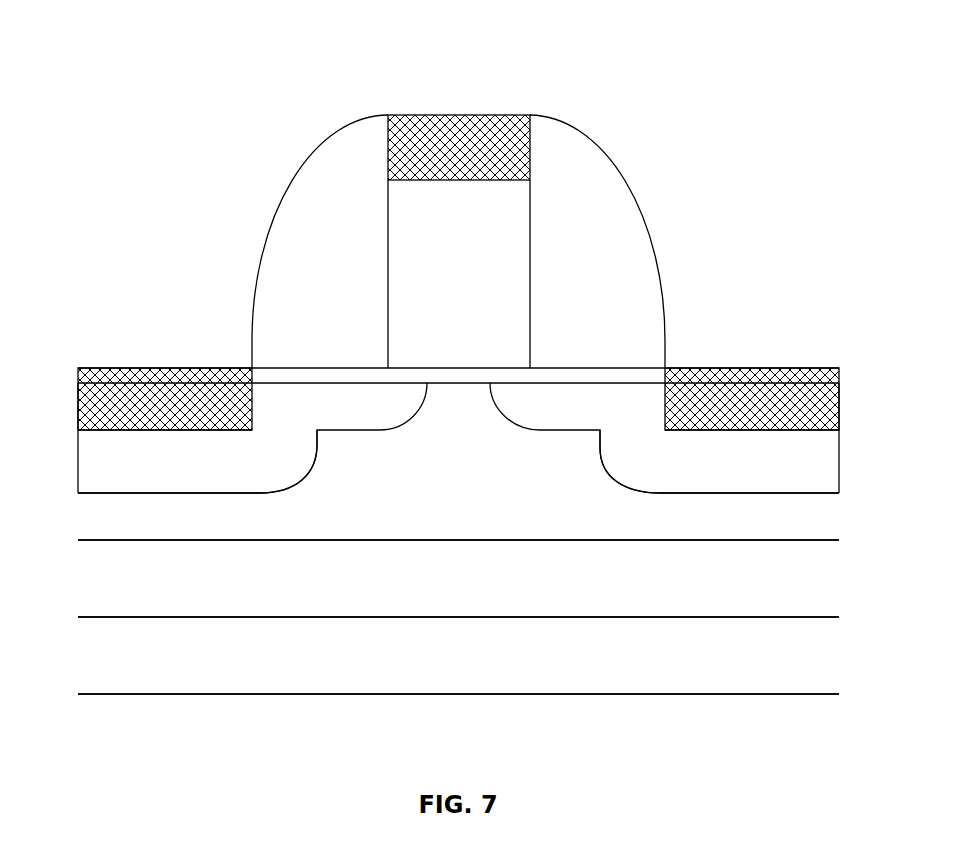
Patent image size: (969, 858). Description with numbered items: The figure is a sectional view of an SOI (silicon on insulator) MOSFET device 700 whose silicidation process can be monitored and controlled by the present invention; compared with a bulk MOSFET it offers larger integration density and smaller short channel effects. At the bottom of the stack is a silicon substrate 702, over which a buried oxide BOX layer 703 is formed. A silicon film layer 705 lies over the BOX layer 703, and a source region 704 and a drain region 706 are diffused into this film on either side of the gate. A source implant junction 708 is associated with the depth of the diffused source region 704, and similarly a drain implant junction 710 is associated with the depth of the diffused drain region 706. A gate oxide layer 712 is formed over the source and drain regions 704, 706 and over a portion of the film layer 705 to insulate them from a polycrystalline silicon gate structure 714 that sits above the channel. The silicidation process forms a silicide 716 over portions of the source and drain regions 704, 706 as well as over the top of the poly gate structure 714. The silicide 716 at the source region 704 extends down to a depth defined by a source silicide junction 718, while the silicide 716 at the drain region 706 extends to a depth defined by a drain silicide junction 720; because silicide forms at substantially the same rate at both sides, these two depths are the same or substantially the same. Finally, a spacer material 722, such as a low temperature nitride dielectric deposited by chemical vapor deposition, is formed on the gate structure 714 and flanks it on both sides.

The SOI MOSFET device 700 is at (588, 39).
The silicon substrate 702 is at (458, 655).
The BOX layer 703 is at (458, 578).
The source region 704 is at (107, 438).
The silicon film layer 705 is at (458, 461).
The drain region 706 is at (813, 438).
The source implant junction 708 is at (203, 494).
The drain implant junction 710 is at (716, 496).
The gate oxide layer 712 is at (570, 378).
The polycrystalline silicon gate structure 714 is at (459, 274).
The silicide 716 is at (460, 114).
The source silicide junction 718 is at (188, 431).
The drain silicide junction 720 is at (728, 433).
The spacer material 722 is at (458, 241).